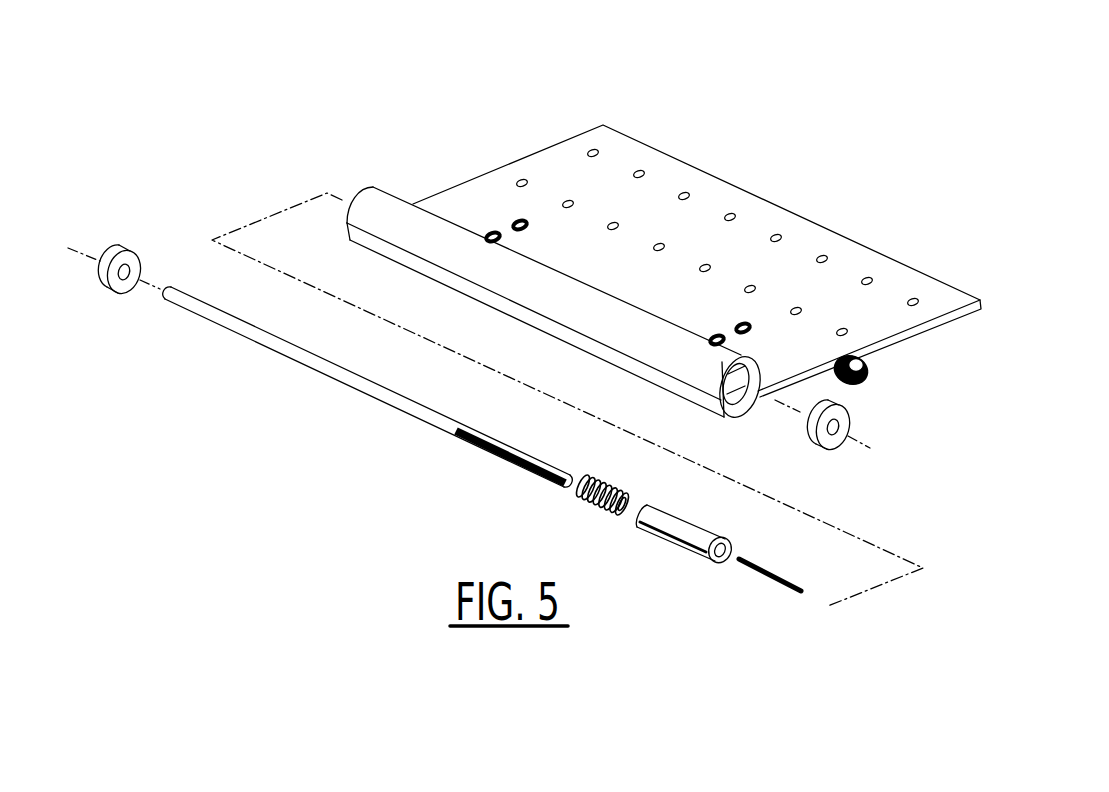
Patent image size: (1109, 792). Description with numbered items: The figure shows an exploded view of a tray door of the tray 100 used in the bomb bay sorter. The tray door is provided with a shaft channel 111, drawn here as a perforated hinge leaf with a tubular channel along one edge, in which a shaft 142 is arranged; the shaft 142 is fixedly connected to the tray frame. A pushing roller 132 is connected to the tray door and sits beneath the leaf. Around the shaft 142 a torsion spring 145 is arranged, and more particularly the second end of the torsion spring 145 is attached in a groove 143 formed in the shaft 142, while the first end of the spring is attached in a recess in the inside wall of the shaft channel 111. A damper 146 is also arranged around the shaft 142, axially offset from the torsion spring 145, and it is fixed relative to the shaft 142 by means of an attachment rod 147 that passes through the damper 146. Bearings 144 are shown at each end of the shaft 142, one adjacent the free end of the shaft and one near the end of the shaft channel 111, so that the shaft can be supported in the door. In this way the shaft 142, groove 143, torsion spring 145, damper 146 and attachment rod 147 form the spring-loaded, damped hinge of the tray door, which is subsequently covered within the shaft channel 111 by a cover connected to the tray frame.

The tray 100 is at (237, 118).
The shaft channel 111 is at (378, 213).
The pushing roller 132 is at (862, 367).
The shaft 142 is at (292, 355).
The shaft groove 143 is at (503, 452).
The bearing 144 is at (118, 284).
The torsion spring 145 is at (587, 500).
The damper 146 is at (692, 537).
The attachment rod 147 is at (767, 578).